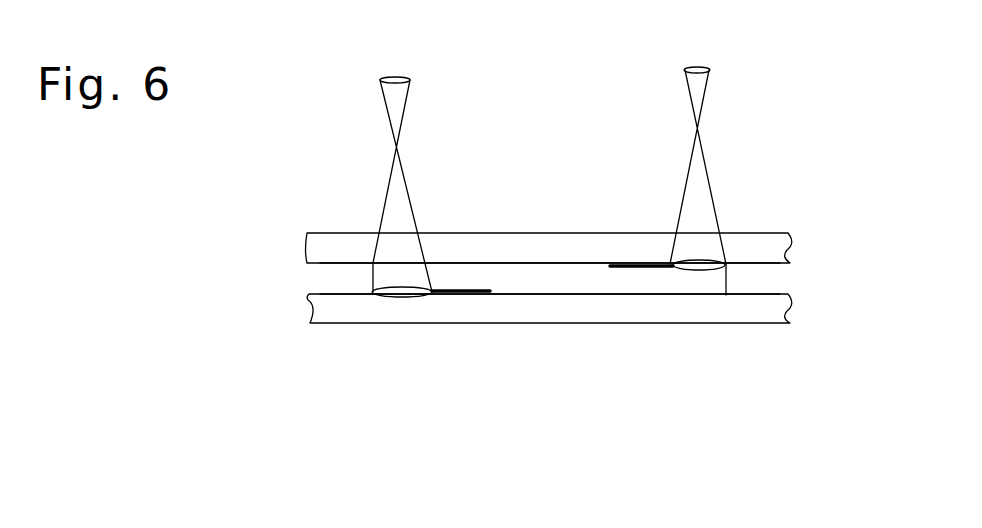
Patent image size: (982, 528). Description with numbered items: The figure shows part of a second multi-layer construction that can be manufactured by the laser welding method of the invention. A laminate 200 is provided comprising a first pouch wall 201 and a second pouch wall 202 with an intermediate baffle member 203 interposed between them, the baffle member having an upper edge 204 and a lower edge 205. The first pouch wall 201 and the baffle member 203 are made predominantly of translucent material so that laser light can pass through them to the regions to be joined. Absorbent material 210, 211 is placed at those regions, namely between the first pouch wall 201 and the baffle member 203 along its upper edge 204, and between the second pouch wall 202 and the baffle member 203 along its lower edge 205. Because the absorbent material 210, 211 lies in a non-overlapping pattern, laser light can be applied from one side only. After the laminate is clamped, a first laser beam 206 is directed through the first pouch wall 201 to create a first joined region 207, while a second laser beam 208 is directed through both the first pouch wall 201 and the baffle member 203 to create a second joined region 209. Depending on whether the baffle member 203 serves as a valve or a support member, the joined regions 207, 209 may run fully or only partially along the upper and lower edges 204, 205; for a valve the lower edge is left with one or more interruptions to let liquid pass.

The laminate 200 is at (815, 180).
The first pouch wall 201 is at (505, 252).
The second pouch wall 202 is at (592, 307).
The baffle member 203 is at (525, 277).
The upper edge of baffle member 204 is at (728, 282).
The lower edge of baffle member 205 is at (372, 285).
The first laser beam 206 is at (709, 100).
The first joined region 207 is at (697, 262).
The second laser beam 208 is at (401, 93).
The second joined region 209 is at (402, 297).
The absorbent material 210 is at (643, 262).
The absorbent material 211 is at (465, 296).